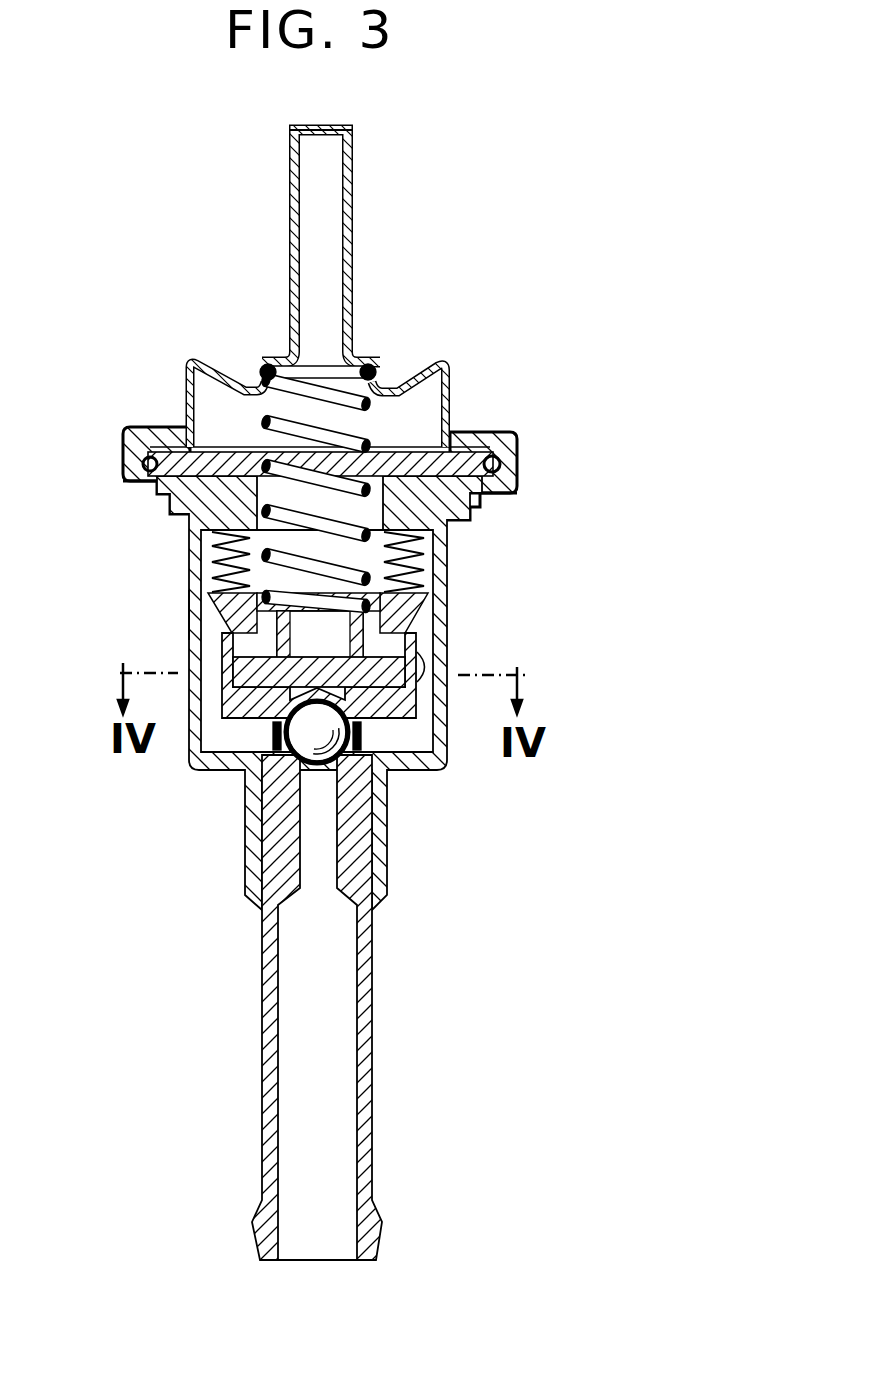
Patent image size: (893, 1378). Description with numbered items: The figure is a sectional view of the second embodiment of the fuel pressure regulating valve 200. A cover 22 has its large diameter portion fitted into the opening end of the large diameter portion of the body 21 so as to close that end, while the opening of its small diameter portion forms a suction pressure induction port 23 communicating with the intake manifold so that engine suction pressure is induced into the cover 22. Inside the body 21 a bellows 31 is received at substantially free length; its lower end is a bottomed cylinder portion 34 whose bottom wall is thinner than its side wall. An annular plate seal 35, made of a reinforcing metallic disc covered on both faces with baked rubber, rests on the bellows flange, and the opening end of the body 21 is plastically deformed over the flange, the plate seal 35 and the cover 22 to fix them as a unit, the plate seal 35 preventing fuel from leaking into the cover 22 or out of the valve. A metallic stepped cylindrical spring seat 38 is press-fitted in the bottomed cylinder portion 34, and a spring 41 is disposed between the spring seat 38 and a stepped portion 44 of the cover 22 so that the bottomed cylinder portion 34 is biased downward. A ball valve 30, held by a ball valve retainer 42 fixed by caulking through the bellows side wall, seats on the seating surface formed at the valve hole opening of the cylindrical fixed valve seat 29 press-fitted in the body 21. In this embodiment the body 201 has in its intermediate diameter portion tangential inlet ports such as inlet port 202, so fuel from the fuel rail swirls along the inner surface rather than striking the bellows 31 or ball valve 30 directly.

The fuel pressure regulating valve 200 is at (168, 350).
The body 201 is at (180, 612).
The inlet port 202 is at (443, 670).
The body 21 is at (190, 550).
The cover 22 is at (452, 377).
The suction pressure induction port 23 is at (327, 137).
The fixed valve seat 29 is at (277, 850).
The ball valve 30 is at (288, 742).
The bellows 31 is at (196, 600).
The bottomed cylinder portion 34 is at (222, 662).
The plate seal 35 is at (500, 467).
The spring seat 38 is at (443, 632).
The spring 41 is at (385, 357).
The ball valve retainer 42 is at (278, 712).
The stepped portion 44 is at (364, 358).